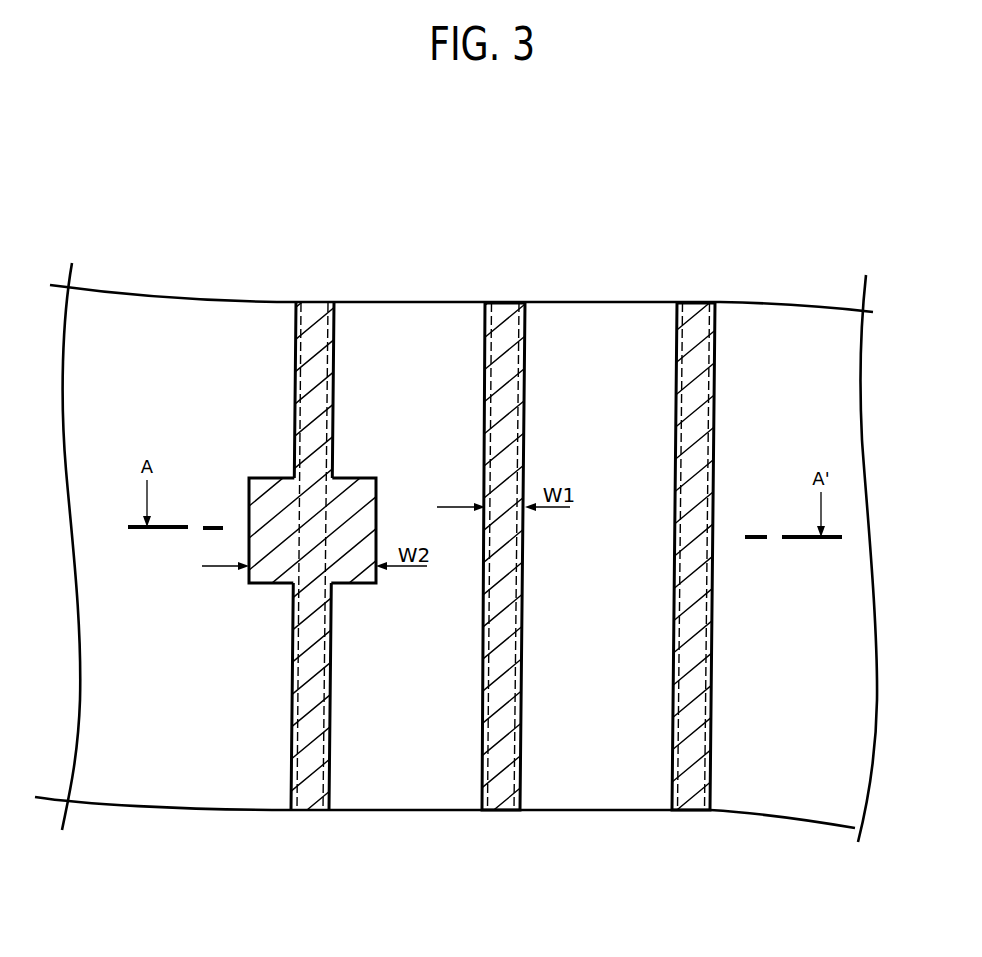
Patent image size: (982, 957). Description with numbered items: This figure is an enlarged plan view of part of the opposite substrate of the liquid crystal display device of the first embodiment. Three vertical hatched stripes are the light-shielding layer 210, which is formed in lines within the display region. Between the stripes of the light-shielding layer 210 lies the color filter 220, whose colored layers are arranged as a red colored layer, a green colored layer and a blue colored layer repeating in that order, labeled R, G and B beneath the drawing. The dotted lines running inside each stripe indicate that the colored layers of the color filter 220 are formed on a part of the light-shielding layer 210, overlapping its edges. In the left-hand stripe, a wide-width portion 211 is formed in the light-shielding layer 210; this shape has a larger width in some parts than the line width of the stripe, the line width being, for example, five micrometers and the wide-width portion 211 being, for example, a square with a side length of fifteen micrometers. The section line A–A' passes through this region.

The light-shielding layer 210 is at (312, 306).
The wide-width portion 211 is at (365, 484).
The color filter 220 is at (213, 792).